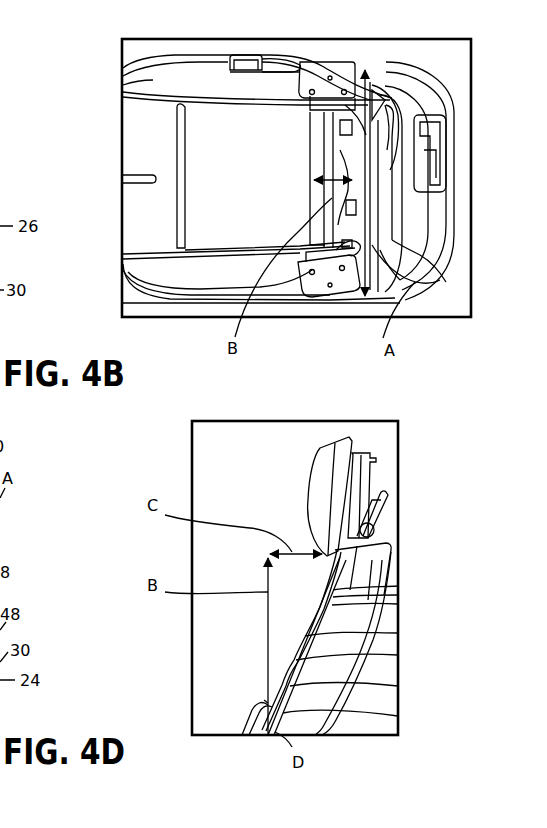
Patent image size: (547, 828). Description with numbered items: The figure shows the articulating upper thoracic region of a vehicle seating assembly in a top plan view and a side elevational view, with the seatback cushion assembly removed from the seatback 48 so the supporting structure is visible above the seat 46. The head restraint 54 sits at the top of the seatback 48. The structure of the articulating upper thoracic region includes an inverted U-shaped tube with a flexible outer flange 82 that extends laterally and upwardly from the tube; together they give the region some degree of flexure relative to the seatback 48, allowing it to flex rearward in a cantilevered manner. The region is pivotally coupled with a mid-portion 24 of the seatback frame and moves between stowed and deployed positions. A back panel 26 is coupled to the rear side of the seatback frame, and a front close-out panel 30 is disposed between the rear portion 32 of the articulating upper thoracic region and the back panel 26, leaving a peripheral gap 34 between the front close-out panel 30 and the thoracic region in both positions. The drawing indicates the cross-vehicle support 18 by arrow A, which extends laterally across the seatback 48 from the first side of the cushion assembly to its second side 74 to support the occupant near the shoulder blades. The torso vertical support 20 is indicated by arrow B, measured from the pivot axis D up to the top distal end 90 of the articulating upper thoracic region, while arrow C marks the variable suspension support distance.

In FIG. 4B, the seat 46 is at (150, 78).
In FIG. 4B, the seatback 48 is at (374, 68).
In FIG. 4D, the seatback 48 is at (363, 576).
In FIG. 4B, the outer flange 82 is at (388, 96).
In FIG. 4B, the back panel 26 is at (447, 112).
In FIG. 4D, the back panel 26 is at (398, 633).
In FIG. 4B, the head restraint 54 is at (405, 242).
In FIG. 4D, the head restraint 54 is at (328, 478).
In FIG. 4B, the rear portion 32 is at (418, 283).
In FIG. 4D, the rear portion 32 is at (398, 587).
In FIG. 4D, the top distal end 90 is at (374, 522).
In FIG. 4D, the torso vertical support 20 is at (338, 570).
In FIG. 4D, the peripheral gap 34 is at (398, 596).
In FIG. 4D, the second side 74 is at (398, 604).
In FIG. 4D, the cross-vehicle support 18 is at (398, 654).
In FIG. 4D, the front close-out panel 30 is at (398, 686).
In FIG. 4D, the mid-portion 24 is at (398, 716).